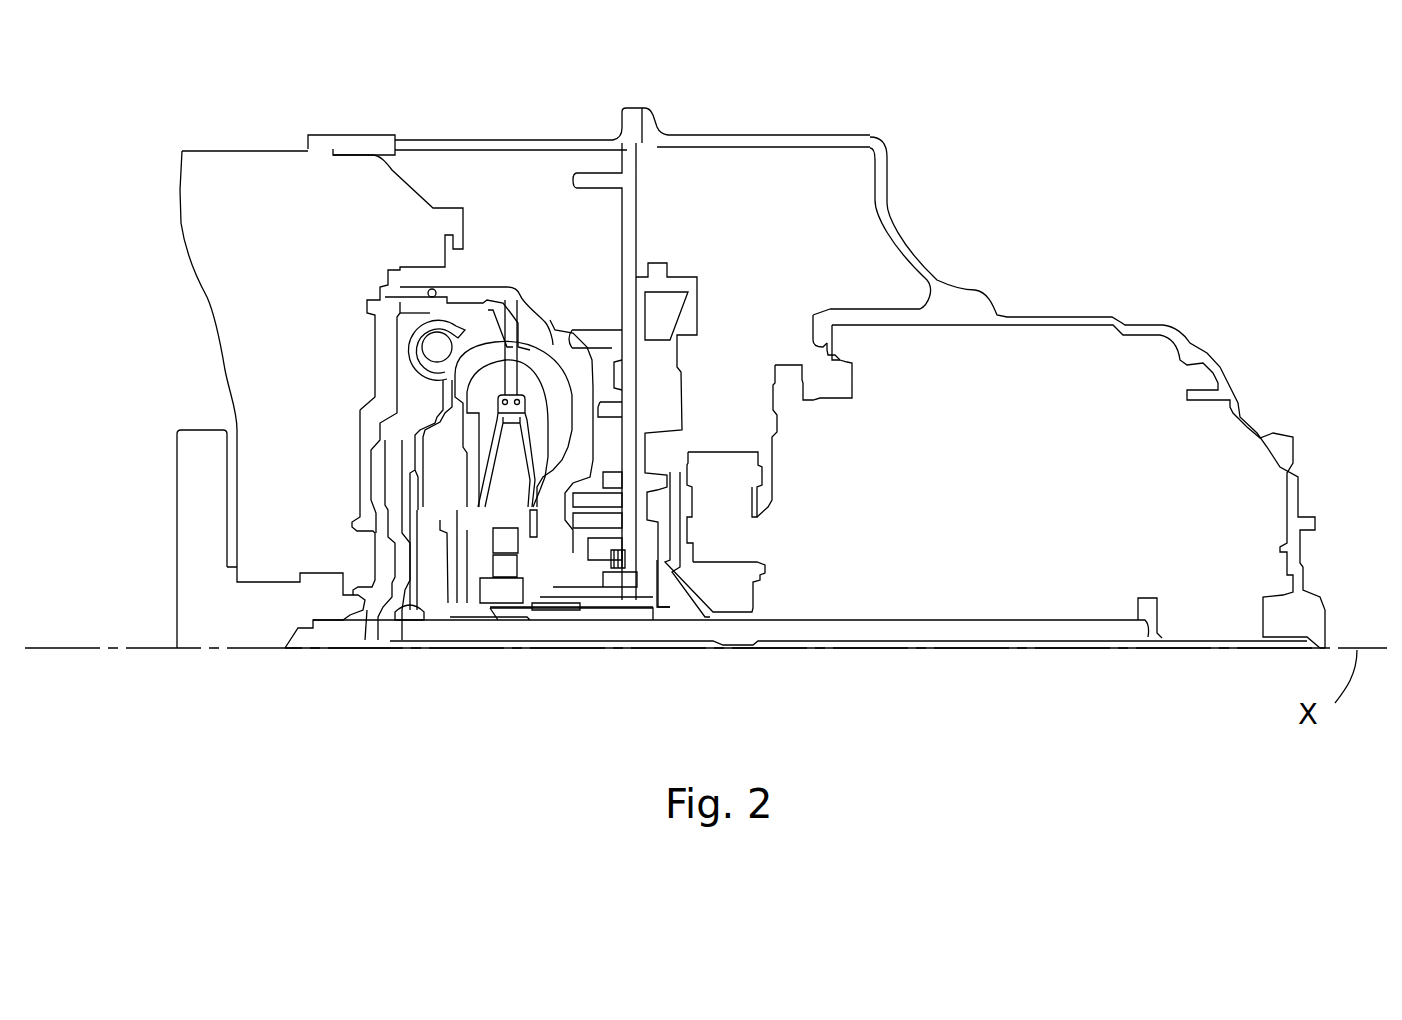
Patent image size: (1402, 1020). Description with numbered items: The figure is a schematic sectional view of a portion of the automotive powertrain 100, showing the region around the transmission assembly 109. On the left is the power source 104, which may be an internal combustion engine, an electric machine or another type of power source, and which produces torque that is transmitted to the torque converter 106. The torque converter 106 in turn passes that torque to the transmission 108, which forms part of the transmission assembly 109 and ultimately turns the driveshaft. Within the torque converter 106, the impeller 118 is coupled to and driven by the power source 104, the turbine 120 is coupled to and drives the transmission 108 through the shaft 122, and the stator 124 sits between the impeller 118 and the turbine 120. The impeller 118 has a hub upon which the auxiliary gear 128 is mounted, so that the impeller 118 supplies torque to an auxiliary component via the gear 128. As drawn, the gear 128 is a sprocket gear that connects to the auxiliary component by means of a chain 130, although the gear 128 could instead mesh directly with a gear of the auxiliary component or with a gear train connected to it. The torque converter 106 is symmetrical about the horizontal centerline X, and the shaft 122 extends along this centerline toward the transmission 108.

The powertrain 100 is at (940, 104).
The power source 104 is at (268, 618).
The torque converter 106 is at (476, 288).
The transmission 108 is at (1038, 373).
The transmission assembly 109 is at (612, 660).
The impeller 118 is at (545, 372).
The turbine 120 is at (470, 447).
The shaft 122 is at (827, 628).
The stator 124 is at (503, 490).
The auxiliary gear 128 is at (613, 580).
The chain 130 is at (627, 557).